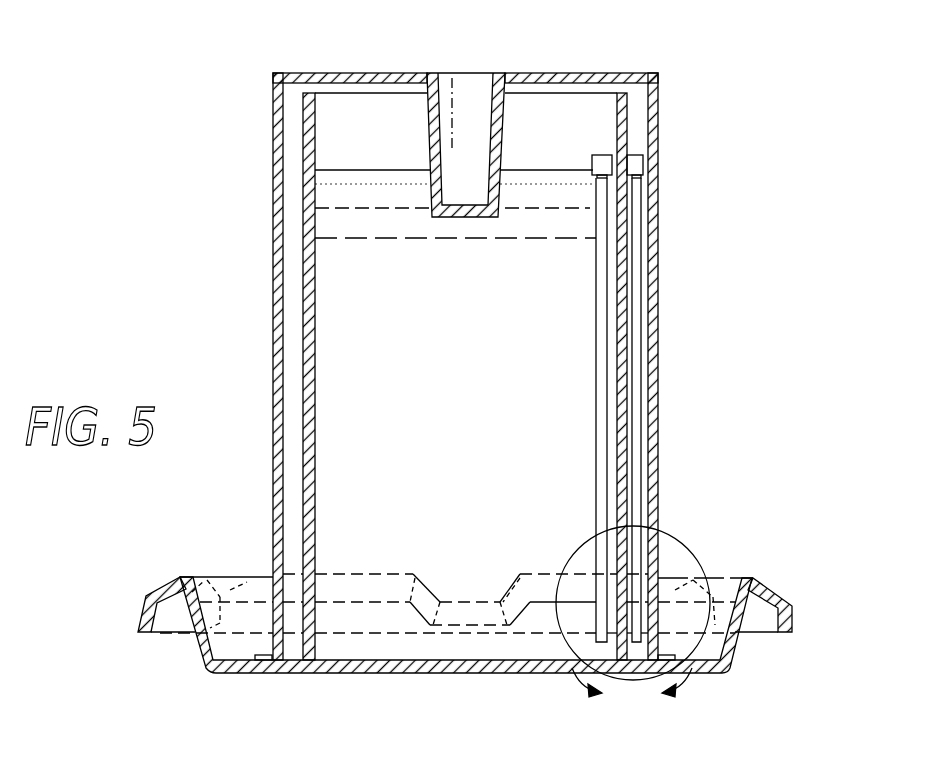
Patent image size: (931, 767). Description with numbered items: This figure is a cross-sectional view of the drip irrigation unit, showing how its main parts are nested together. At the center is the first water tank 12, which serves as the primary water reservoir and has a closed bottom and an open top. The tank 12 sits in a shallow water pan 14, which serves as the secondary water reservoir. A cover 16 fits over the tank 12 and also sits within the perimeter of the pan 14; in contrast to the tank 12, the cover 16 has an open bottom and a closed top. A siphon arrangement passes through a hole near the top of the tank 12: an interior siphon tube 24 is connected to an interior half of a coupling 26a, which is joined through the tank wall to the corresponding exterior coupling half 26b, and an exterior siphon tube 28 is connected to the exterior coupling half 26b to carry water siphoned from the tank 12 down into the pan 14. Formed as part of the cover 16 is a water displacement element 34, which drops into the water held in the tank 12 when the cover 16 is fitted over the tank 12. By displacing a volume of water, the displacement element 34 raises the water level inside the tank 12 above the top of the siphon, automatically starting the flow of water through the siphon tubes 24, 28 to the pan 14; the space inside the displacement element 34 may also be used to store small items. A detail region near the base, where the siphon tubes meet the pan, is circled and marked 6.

The first water tank 12 is at (587, 110).
The water pan 14 is at (792, 610).
The cover 16 is at (658, 117).
The interior siphon tube 24 is at (600, 323).
The interior half of the coupling 26a is at (602, 155).
The exterior coupling half 26b is at (643, 167).
The exterior siphon tube 28 is at (636, 270).
The water displacement element 34 is at (476, 90).
The detail circle for FIG. 6 is at (633, 624).